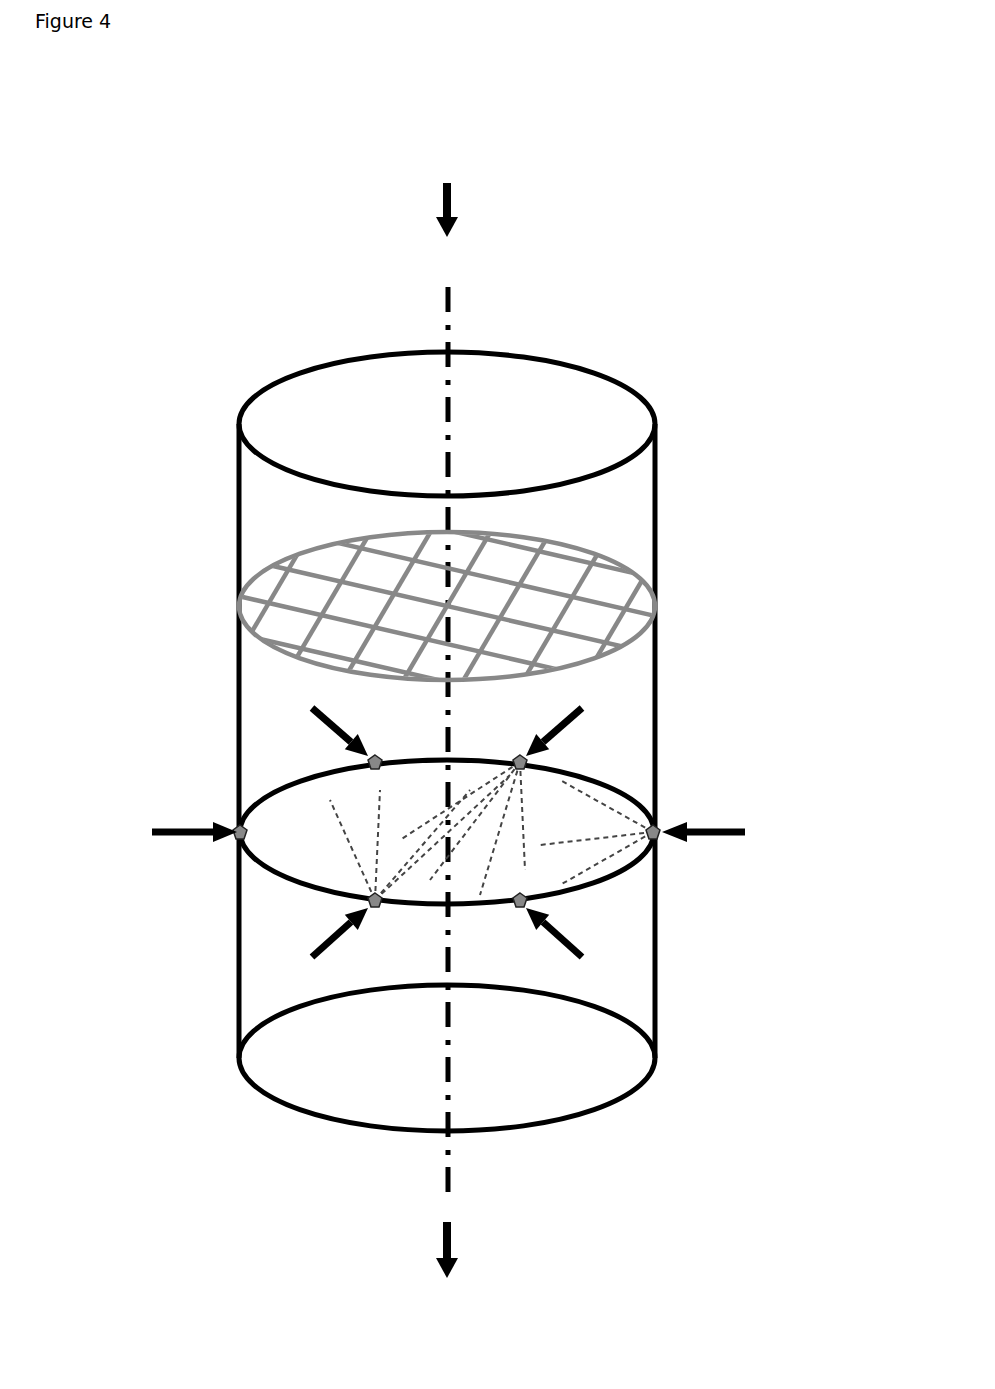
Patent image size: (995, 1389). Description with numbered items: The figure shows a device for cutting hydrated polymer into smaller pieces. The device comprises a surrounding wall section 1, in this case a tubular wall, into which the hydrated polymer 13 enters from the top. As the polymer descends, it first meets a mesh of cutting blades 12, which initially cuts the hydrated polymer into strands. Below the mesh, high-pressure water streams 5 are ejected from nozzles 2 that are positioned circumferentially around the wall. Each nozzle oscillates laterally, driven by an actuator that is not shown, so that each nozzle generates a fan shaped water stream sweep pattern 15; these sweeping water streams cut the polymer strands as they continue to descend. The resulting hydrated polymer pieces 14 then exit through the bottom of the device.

The surrounding wall section 1 is at (237, 515).
The mesh of cutting blades 12 is at (285, 650).
The fan shaped water stream sweep pattern 15 is at (300, 852).
The nozzles 2 is at (237, 828).
The high-pressure water streams 5 is at (605, 857).
The hydrated polymer 13 is at (447, 163).
The hydrated polymer pieces 14 is at (447, 1294).